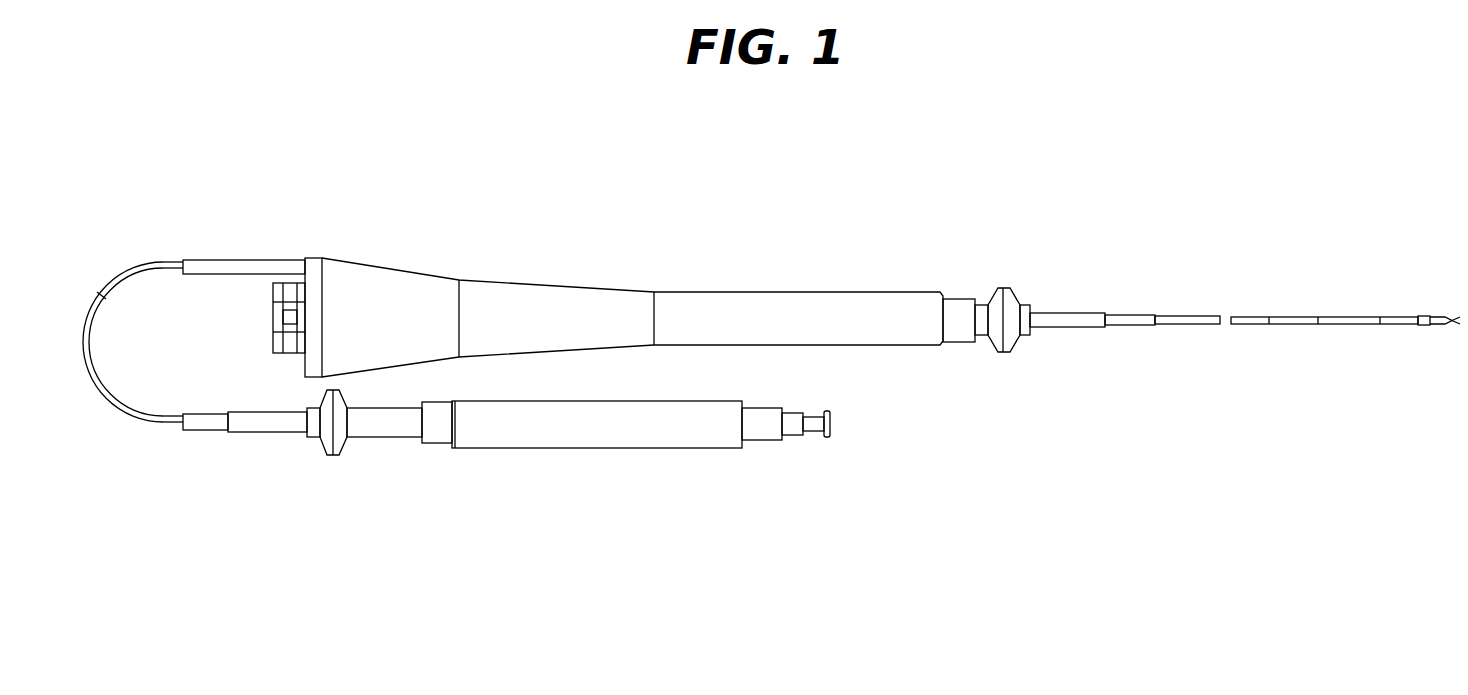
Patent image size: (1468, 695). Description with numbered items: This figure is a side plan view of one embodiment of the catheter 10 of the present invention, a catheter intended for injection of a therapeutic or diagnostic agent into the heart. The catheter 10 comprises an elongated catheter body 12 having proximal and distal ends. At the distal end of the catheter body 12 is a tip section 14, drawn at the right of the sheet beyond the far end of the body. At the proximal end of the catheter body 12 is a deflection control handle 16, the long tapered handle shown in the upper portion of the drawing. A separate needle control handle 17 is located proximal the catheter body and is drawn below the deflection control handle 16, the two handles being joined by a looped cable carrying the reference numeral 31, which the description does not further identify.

The catheter 10 is at (1030, 243).
The catheter body 12 is at (1240, 315).
The tip section 14 is at (1423, 315).
The deflection control handle 16 is at (569, 285).
The needle control handle 17 is at (550, 470).
The cable loop 31 is at (113, 393).